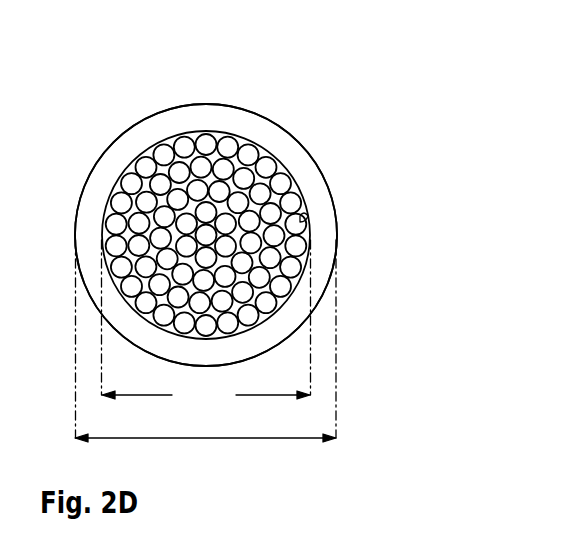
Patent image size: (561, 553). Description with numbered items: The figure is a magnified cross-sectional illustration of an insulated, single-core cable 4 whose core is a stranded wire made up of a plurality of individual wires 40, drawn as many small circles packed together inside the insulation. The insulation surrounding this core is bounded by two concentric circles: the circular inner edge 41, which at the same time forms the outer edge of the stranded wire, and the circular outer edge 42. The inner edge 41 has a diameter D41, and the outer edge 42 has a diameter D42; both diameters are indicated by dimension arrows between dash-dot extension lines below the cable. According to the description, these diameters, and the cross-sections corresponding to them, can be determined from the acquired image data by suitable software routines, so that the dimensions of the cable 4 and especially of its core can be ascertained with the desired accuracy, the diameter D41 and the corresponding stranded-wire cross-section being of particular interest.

The insulated single-core cable 4 is at (345, 104).
The individual wires 40 is at (210, 142).
The inner edge of the insulation 41 is at (302, 220).
The outer edge of the insulation 42 is at (113, 148).
The diameter of the inner edge D41 is at (206, 326).
The diameter of the outer edge D42 is at (283, 438).